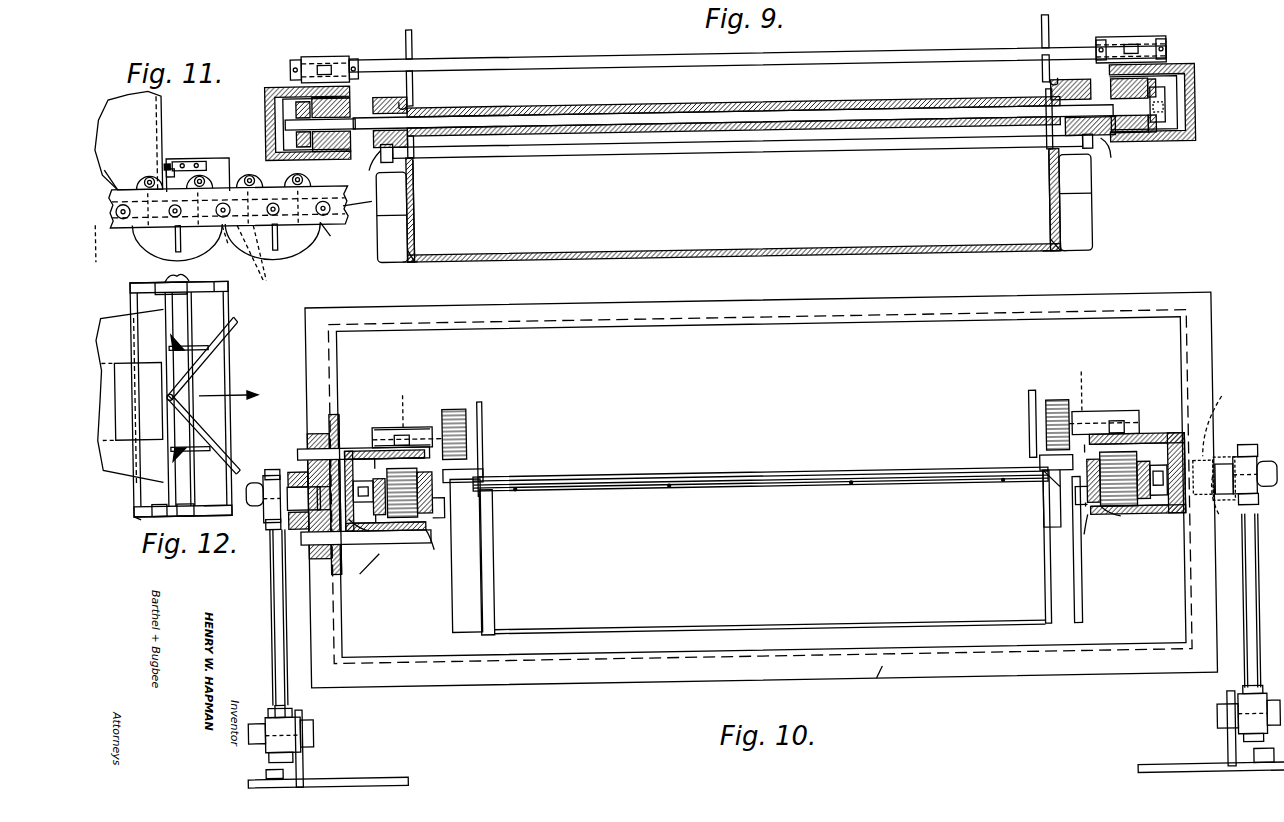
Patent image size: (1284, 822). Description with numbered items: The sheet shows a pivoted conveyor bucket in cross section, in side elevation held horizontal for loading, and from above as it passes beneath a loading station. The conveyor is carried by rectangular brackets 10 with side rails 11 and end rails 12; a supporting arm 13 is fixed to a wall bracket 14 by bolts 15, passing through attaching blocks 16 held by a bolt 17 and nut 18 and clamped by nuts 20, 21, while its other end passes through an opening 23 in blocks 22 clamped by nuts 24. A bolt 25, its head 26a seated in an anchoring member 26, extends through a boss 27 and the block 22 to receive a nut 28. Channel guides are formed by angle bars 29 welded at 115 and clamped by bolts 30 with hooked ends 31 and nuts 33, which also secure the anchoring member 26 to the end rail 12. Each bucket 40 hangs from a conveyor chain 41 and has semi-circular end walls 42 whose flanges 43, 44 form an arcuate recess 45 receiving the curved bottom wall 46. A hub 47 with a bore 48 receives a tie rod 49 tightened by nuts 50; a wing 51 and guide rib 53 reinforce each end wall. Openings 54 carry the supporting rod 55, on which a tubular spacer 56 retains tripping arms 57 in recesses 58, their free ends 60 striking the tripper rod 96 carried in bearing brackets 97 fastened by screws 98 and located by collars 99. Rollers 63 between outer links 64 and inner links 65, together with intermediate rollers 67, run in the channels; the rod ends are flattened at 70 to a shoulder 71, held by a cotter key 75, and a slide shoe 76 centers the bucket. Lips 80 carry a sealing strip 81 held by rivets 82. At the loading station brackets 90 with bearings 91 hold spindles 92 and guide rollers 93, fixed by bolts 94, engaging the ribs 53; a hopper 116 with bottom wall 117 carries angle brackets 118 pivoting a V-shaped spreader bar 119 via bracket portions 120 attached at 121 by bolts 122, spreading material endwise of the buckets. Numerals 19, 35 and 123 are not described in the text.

In FIG. 10, the bracket 10 is at (875, 676).
In FIG. 10, the side rail 11 is at (718, 326).
In FIG. 10, the end rail 12 is at (337, 342).
In FIG. 10, the supporting arm 13 is at (265, 633).
In FIG. 10, the bracket 14 is at (296, 778).
In FIG. 10, the bolt 15 is at (276, 773).
In FIG. 10, the attaching block 16 is at (262, 712).
In FIG. 10, the bolt 17 is at (306, 727).
In FIG. 10, the nut 18 is at (244, 722).
In FIG. 10, the upright plate 19 is at (296, 713).
In FIG. 10, the clamping nut 20 is at (278, 708).
In FIG. 10, the clamping nut 21 is at (295, 745).
In FIG. 10, the block 22 is at (262, 474).
In FIG. 10, the opening 23 is at (258, 498).
In FIG. 10, the clamping nut 24 is at (266, 469).
In FIG. 10, the bolt 25 is at (290, 472).
In FIG. 10, the anchoring member 26 is at (303, 425).
In FIG. 10, the head 26a is at (792, 484).
In FIG. 10, the boss 27 is at (298, 546).
In FIG. 10, the nut 28 is at (247, 505).
In FIG. 11, the angle bar 29 is at (298, 257).
In FIG. 10, the angle bar 29 is at (352, 452).
In FIG. 10, the bolt 30 is at (360, 452).
In FIG. 10, the hooked end 31 is at (1088, 528).
In FIG. 10, the nut 33 is at (295, 452).
In FIG. 10, the spacer 35 is at (360, 482).
In FIG. 9, the bucket 40 is at (686, 266).
In FIG. 11, the bucket 40 is at (130, 252).
In FIG. 12, the bucket 40 is at (230, 356).
In FIG. 10, the bucket 40 is at (743, 628).
In FIG. 11, the conveyor chain 41 is at (312, 237).
In FIG. 9, the end wall 42 is at (384, 208).
In FIG. 11, the end wall 42 is at (350, 202).
In FIG. 12, the end wall 42 is at (206, 284).
In FIG. 10, the end wall 42 is at (489, 574).
In FIG. 9, the marginal flange 43 is at (412, 264).
In FIG. 12, the marginal flange 43 is at (206, 506).
In FIG. 9, the flange 44 is at (414, 257).
In FIG. 9, the arcuate recess 45 is at (404, 264).
In FIG. 9, the bottom wall 46 is at (612, 256).
In FIG. 12, the bottom wall 46 is at (224, 305).
In FIG. 10, the bottom wall 46 is at (838, 623).
In FIG. 9, the hub portion 47 is at (400, 75).
In FIG. 12, the hub portion 47 is at (133, 518).
In FIG. 10, the hub portion 47 is at (430, 498).
In FIG. 9, the transverse bore 48 is at (413, 184).
In FIG. 9, the tie rod 49 is at (672, 159).
In FIG. 9, the clamping nut 50 is at (381, 158).
In FIG. 10, the clamping nut 50 is at (759, 503).
In FIG. 9, the wing portion 51 is at (376, 256).
In FIG. 11, the wing portion 51 is at (180, 244).
In FIG. 10, the wing portion 51 is at (447, 602).
In FIG. 11, the guide rib 53 is at (264, 255).
In FIG. 12, the guide rib 53 is at (182, 284).
In FIG. 10, the guide rib 53 is at (480, 477).
In FIG. 9, the aligned opening 54 is at (386, 97).
In FIG. 9, the supporting rod 55 is at (626, 116).
In FIG. 9, the tubular spacer 56 is at (732, 109).
In FIG. 12, the tubular spacer 56 is at (178, 305).
In FIG. 9, the tripping arm 57 is at (414, 89).
In FIG. 12, the tripping arm 57 is at (150, 284).
In FIG. 10, the tripping arm 57 is at (480, 437).
In FIG. 9, the recess 58 is at (414, 102).
In FIG. 9, the free end 60 is at (414, 40).
In FIG. 10, the free end 60 is at (1027, 411).
In FIG. 9, the roller 63 is at (342, 98).
In FIG. 11, the roller 63 is at (247, 253).
In FIG. 10, the roller 63 is at (762, 485).
In FIG. 9, the outer chain link 64 is at (278, 88).
In FIG. 10, the outer chain link 64 is at (382, 532).
In FIG. 9, the inner chain link 65 is at (368, 166).
In FIG. 10, the inner chain link 65 is at (430, 552).
In FIG. 11, the intermediate guide roller 67 is at (218, 237).
In FIG. 9, the flattened end 70 is at (264, 126).
In FIG. 9, the shoulder 71 is at (320, 127).
In FIG. 9, the cotter key 75 is at (1166, 120).
In FIG. 10, the cotter key 75 is at (1142, 476).
In FIG. 9, the slide shoe 76 is at (270, 104).
In FIG. 10, the slide shoe 76 is at (1150, 520).
In FIG. 10, the lip portion 80 is at (481, 412).
In FIG. 10, the sealing strip 81 is at (718, 480).
In FIG. 10, the rivet 82 is at (512, 495).
In FIG. 11, the bracket 90 is at (250, 178).
In FIG. 10, the bracket 90 is at (410, 429).
In FIG. 10, the bearing portion 91 is at (380, 429).
In FIG. 10, the spindle 92 is at (738, 395).
In FIG. 11, the guide roller 93 is at (205, 180).
In FIG. 10, the guide roller 93 is at (451, 412).
In FIG. 10, the bolt 94 is at (399, 437).
In FIG. 9, the tripper rod 96 is at (547, 59).
In FIG. 9, the bearing bracket 97 is at (340, 55).
In FIG. 9, the machine screw 98 is at (324, 64).
In FIG. 9, the retaining collar 99 is at (294, 58).
In FIG. 10, the weld 115 is at (340, 420).
In FIG. 11, the loading hopper 116 is at (162, 112).
In FIG. 12, the loading hopper 116 is at (130, 396).
In FIG. 11, the bottom wall 117 is at (112, 180).
In FIG. 12, the bottom wall 117 is at (131, 401).
In FIG. 12, the angle bracket 118 is at (180, 340).
In FIG. 11, the spreader bar 119 is at (218, 160).
In FIG. 12, the spreader bar 119 is at (222, 380).
In FIG. 11, the bracket portion 120 is at (186, 163).
In FIG. 12, the bracket portion 120 is at (190, 347).
In FIG. 12, the attachment 121 is at (230, 338).
In FIG. 11, the bolt 122 is at (172, 170).
In FIG. 12, the bolt 122 is at (183, 383).
In FIG. 11, the hub 123 is at (170, 165).
In FIG. 12, the hub 123 is at (172, 408).